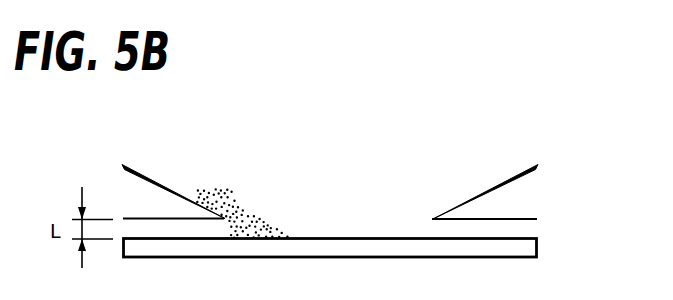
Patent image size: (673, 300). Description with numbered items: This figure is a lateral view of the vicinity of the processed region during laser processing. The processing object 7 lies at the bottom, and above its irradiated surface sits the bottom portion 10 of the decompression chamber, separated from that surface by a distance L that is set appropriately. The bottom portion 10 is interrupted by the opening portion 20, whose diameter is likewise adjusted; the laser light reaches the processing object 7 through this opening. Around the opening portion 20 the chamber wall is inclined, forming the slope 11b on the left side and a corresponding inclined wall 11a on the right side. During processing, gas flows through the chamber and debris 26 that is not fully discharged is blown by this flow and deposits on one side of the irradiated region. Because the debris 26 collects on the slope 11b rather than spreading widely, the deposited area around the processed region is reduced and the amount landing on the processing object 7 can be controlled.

The processing object 7 is at (537, 245).
The bottom portion 10 is at (510, 219).
The first blade 11a is at (520, 188).
The slope 11b is at (198, 193).
The opening portion 20 is at (392, 225).
The debris 26 is at (230, 207).